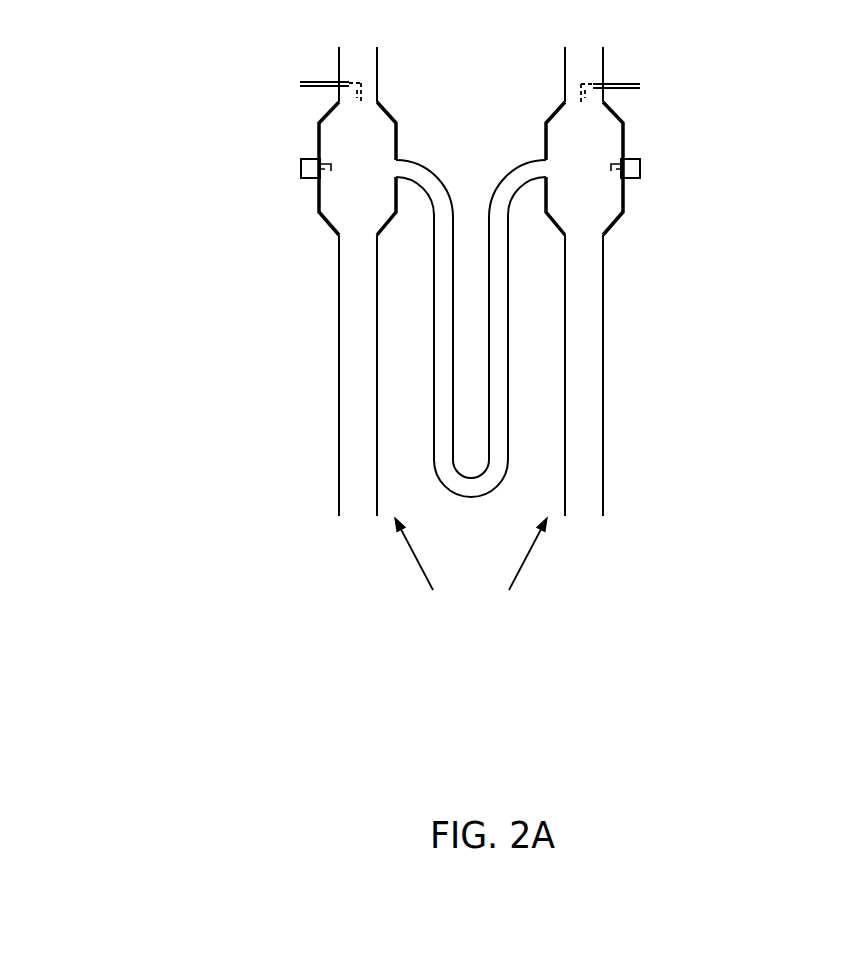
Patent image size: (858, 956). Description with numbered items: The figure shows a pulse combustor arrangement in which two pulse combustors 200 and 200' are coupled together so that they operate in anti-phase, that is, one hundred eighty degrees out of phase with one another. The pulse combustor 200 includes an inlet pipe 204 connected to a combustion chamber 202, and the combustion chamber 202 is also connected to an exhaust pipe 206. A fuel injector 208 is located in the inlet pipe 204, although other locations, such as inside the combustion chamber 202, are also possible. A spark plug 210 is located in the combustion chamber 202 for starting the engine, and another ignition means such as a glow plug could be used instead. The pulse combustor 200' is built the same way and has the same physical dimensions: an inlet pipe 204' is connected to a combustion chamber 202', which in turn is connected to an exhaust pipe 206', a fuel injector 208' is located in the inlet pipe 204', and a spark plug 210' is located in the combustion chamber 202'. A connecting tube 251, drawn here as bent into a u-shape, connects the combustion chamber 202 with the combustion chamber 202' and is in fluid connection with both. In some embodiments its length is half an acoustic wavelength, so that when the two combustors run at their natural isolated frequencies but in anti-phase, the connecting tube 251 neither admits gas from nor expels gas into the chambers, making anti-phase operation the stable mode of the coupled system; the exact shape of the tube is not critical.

The pulse combustor 200 is at (418, 572).
The pulse combustor 200' is at (522, 572).
The combustion chamber 202 is at (286, 168).
The combustion chamber 202' is at (655, 168).
The inlet pipe 204 is at (286, 61).
The inlet pipe 204' is at (660, 62).
The exhaust pipe 206 is at (284, 375).
The exhaust pipe 206' is at (662, 375).
The fuel injector 208 is at (230, 70).
The fuel injector 208' is at (712, 71).
The spark plug 210 is at (245, 147).
The spark plug 210' is at (700, 147).
The connecting tube 251 is at (434, 173).